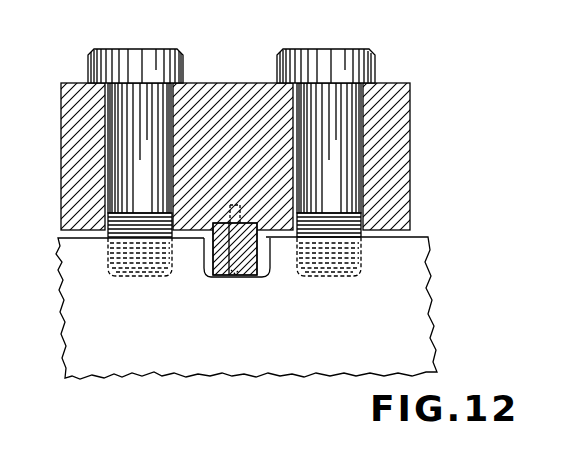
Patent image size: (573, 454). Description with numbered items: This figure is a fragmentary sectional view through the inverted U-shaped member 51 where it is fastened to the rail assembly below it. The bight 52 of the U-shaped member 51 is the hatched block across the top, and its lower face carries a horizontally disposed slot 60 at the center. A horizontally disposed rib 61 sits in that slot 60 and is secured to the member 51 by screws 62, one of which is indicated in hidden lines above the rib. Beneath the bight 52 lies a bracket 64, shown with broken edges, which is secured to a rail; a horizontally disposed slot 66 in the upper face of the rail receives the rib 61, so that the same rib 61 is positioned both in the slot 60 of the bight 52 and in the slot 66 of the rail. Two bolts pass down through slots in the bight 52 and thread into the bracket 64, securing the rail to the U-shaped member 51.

The inverted U-shaped member 51 is at (220, 135).
The bight 52 is at (253, 90).
The horizontally disposed slot 60 is at (237, 225).
The horizontally disposed rib 61 is at (224, 229).
The screw 62 is at (237, 205).
The bracket 64 is at (405, 258).
The horizontally disposed slot 66 is at (206, 276).